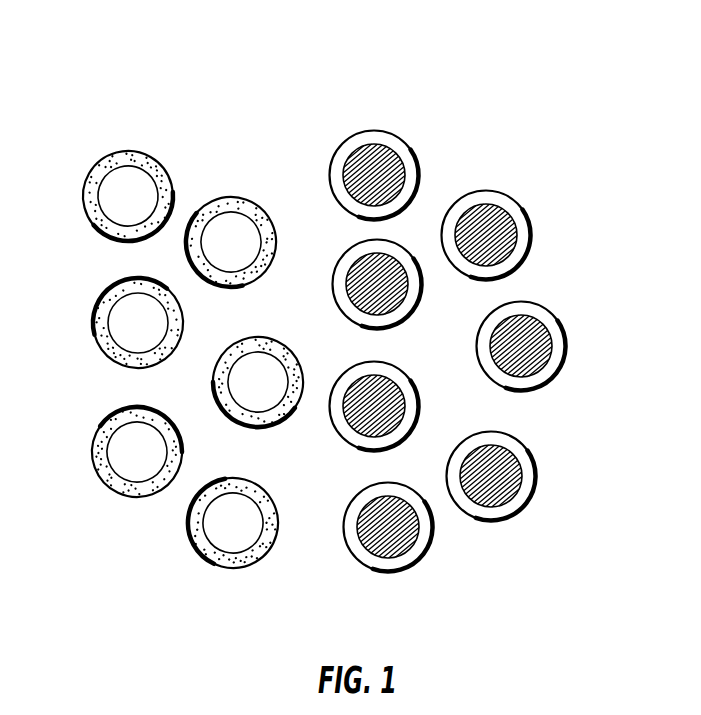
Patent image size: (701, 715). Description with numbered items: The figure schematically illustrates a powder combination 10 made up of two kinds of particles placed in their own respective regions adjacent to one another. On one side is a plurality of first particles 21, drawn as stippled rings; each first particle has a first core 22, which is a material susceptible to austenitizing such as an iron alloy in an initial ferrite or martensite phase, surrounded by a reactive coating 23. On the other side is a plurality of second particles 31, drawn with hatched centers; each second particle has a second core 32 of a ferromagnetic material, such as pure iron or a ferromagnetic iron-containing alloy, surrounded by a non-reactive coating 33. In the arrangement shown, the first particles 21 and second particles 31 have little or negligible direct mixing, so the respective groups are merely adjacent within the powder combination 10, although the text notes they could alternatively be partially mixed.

The powder combination 10 is at (182, 88).
The plurality of first particles 21 is at (232, 190).
The first core 22 is at (127, 312).
The reactive coating 23 is at (99, 323).
The plurality of second particles 31 is at (378, 122).
The second core 32 is at (500, 232).
The non-reactive coating 33 is at (506, 205).